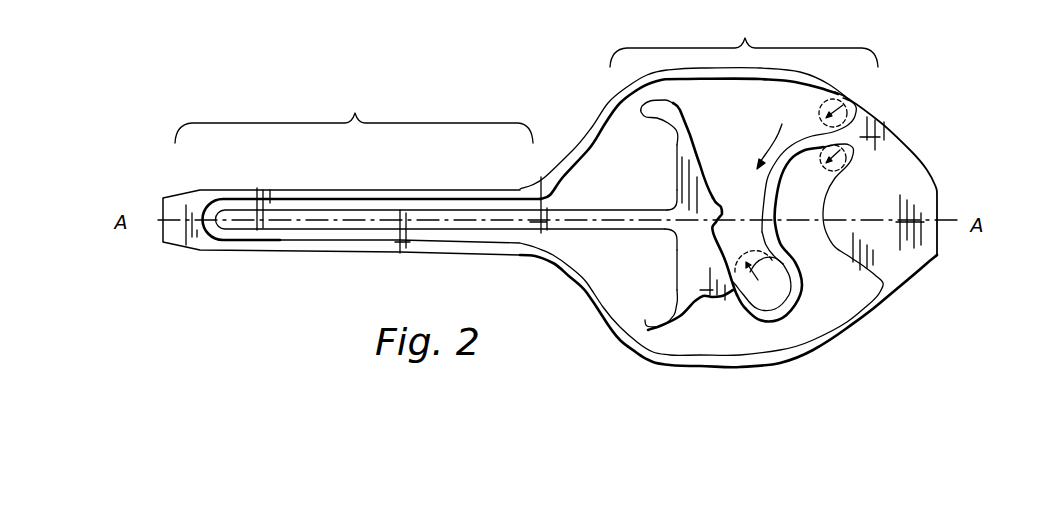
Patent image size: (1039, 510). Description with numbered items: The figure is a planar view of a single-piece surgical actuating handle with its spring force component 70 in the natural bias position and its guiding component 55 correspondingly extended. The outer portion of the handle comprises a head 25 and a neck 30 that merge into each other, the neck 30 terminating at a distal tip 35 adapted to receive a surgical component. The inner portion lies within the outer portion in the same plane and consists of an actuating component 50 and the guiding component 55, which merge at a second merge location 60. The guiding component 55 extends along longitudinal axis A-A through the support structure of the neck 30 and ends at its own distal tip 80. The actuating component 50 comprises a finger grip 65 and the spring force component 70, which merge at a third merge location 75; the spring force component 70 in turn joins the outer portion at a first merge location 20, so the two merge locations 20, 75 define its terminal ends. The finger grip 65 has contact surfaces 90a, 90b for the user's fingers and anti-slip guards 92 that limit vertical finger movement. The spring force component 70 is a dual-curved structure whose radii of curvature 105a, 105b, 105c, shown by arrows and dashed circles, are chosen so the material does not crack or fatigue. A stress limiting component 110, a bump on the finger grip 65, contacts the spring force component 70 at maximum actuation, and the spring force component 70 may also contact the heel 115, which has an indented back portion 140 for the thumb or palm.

The first merge location 20 is at (862, 148).
The head 25 is at (709, 104).
The neck 30 is at (361, 168).
The distal tip 35 is at (187, 247).
The actuating component 50 is at (778, 135).
The guiding component 55 is at (352, 215).
The second merge location 60 is at (672, 205).
The finger grip 65 is at (697, 152).
The spring force component 70 is at (780, 234).
The third merge location 75 is at (726, 297).
The distal tip 80 is at (216, 198).
The contact surface 90a is at (677, 172).
The contact surface 90b is at (677, 265).
The anti-slip guards 92 is at (672, 103).
The radius of curvature 105a is at (832, 101).
The radius of curvature 105b is at (856, 160).
The radius of curvature 105c is at (800, 290).
The stress limiting component 110 is at (723, 207).
The heel 115 is at (925, 250).
The indented back portion 140 is at (940, 202).